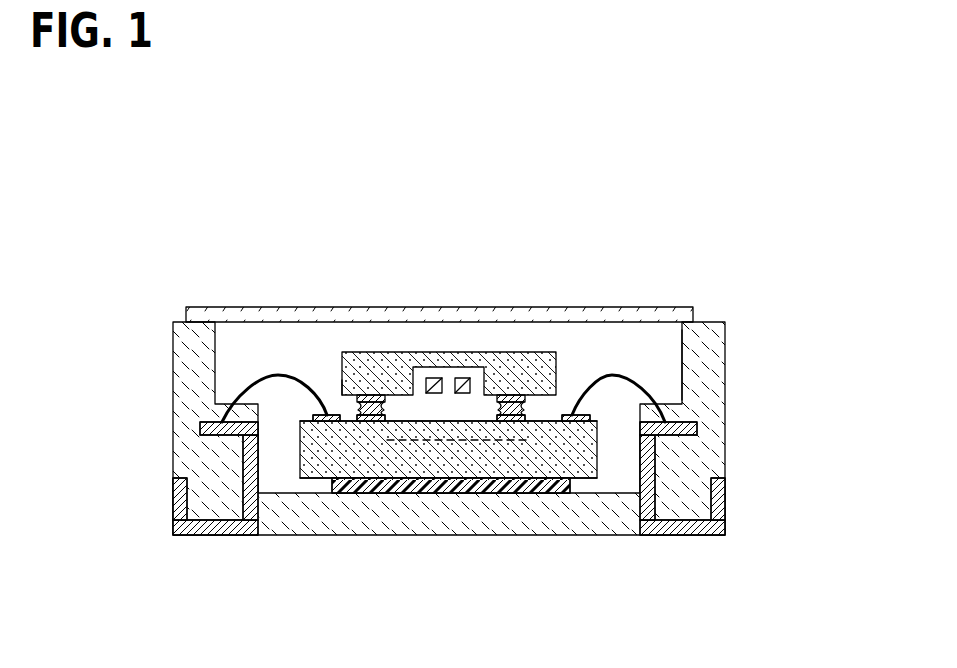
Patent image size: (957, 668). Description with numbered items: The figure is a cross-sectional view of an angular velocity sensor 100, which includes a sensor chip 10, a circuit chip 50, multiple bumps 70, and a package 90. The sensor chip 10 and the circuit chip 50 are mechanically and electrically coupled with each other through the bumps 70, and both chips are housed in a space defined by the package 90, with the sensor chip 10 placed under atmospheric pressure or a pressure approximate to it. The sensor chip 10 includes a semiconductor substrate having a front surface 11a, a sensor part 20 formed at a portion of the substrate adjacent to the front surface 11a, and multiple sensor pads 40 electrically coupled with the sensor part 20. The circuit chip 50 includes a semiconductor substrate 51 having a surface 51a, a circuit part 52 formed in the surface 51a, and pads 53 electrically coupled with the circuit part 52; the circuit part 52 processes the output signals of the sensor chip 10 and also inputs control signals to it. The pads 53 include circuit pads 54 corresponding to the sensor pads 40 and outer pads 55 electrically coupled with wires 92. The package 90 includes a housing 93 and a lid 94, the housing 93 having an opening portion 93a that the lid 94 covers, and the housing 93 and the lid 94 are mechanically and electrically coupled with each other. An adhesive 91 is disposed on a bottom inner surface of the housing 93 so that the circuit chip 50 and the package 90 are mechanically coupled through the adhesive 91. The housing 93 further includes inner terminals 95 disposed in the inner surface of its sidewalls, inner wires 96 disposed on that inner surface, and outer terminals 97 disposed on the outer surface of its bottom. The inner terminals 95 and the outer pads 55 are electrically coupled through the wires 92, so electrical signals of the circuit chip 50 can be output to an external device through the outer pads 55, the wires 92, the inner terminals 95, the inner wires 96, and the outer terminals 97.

The angular velocity sensor 100 is at (763, 222).
The package 90 is at (260, 207).
The housing 93 is at (173, 341).
The lid 94 is at (245, 308).
The opening portion 93a is at (680, 327).
The wires 92 is at (278, 373).
The front surface 11a is at (342, 397).
The sensor pads 40 is at (378, 396).
The sensor chip 10 is at (541, 348).
The bumps 70 is at (532, 411).
The inner terminals 95 is at (695, 427).
The inner wires 96 is at (652, 478).
The outer terminals 97 is at (717, 528).
The surface 51a is at (313, 417).
The semiconductor substrate 51 is at (578, 440).
The circuit chip 50 is at (379, 520).
The circuit part 52 is at (486, 487).
The sensor part 20 is at (455, 405).
The adhesive 91 is at (528, 493).
The pads 53 is at (378, 583).
The circuit pads 54 is at (370, 420).
The outer pads 55 is at (330, 423).